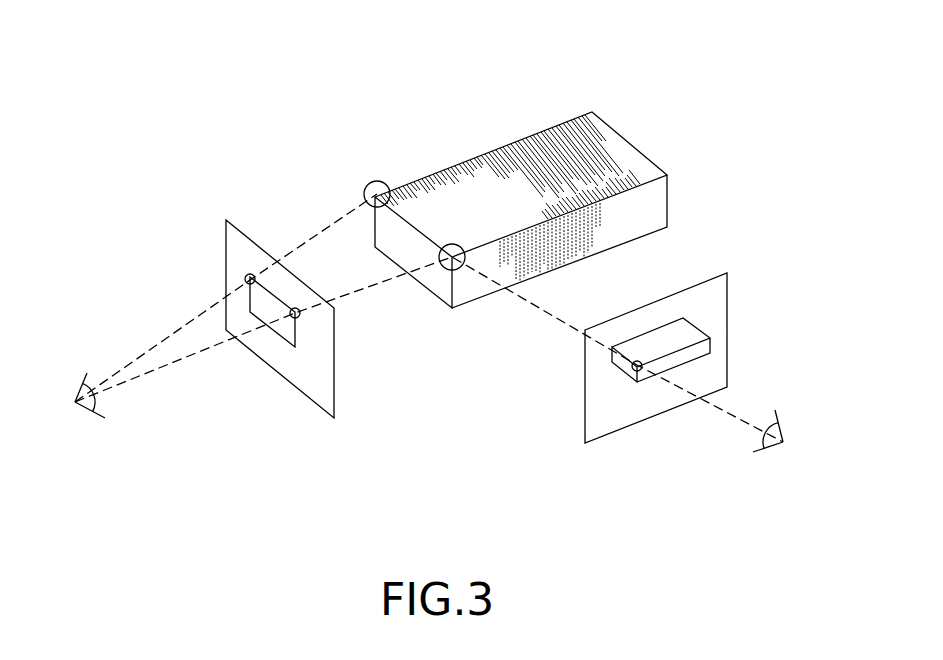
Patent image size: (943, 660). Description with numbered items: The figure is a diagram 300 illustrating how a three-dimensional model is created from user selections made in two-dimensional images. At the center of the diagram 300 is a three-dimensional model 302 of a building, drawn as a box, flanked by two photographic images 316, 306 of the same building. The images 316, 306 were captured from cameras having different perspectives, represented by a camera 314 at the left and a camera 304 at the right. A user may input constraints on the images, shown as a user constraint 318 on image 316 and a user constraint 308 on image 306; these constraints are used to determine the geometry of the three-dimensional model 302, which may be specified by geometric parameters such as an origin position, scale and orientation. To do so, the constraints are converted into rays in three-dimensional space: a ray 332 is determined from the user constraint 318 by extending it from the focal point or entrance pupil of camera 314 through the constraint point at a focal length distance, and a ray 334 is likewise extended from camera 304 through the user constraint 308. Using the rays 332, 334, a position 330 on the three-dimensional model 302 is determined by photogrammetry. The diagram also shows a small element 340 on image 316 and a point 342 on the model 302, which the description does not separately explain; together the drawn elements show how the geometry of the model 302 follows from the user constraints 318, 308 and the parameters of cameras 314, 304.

The diagram 300 is at (726, 43).
The three-dimensional model 302 is at (503, 146).
The camera 304 is at (783, 442).
The photographic image 306 is at (727, 273).
The user constraint 308 is at (612, 368).
The camera 314 is at (75, 402).
The photographic image 316 is at (225, 235).
The user constraint 318 is at (300, 317).
The position 330 is at (455, 243).
The ray 332 is at (188, 360).
The ray 334 is at (548, 315).
The first image source on first plane 340 is at (250, 274).
The second coupling point / optical port 342 is at (368, 183).